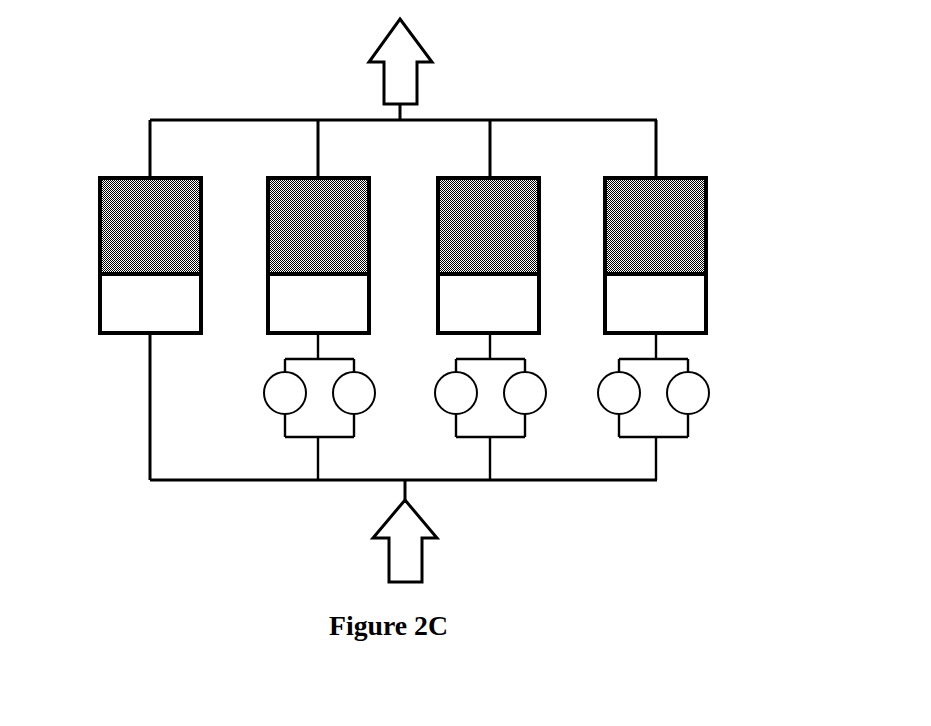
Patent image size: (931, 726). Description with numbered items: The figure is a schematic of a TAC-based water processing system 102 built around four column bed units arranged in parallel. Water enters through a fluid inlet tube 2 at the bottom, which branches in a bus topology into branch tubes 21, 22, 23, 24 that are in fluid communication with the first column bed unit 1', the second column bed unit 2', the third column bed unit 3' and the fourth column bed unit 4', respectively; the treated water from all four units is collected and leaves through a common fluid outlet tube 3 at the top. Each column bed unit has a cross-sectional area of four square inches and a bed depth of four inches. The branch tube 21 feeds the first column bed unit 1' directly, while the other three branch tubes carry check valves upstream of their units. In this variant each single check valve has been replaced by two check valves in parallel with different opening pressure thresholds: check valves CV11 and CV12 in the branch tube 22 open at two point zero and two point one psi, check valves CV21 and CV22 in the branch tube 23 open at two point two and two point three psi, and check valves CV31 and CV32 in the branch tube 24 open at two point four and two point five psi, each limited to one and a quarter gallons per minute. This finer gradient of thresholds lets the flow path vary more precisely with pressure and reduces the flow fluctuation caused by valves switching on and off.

The fluid processing system 102 is at (403, 98).
The fluid outlet tube 3 is at (400, 69).
The fluid inlet tube 2 is at (405, 531).
The first column bed unit 1' is at (133, 255).
The second column bed unit 2' is at (304, 255).
The third column bed unit 3' is at (474, 255).
The fourth column bed unit 4' is at (641, 255).
The branch tube 21 is at (133, 406).
The branch tube 22 is at (319, 406).
The branch tube 23 is at (490, 406).
The branch tube 24 is at (653, 406).
The check valve CV11 is at (285, 393).
The check valve CV12 is at (354, 393).
The check valve CV21 is at (456, 393).
The check valve CV22 is at (525, 393).
The check valve CV31 is at (619, 393).
The check valve CV32 is at (688, 393).